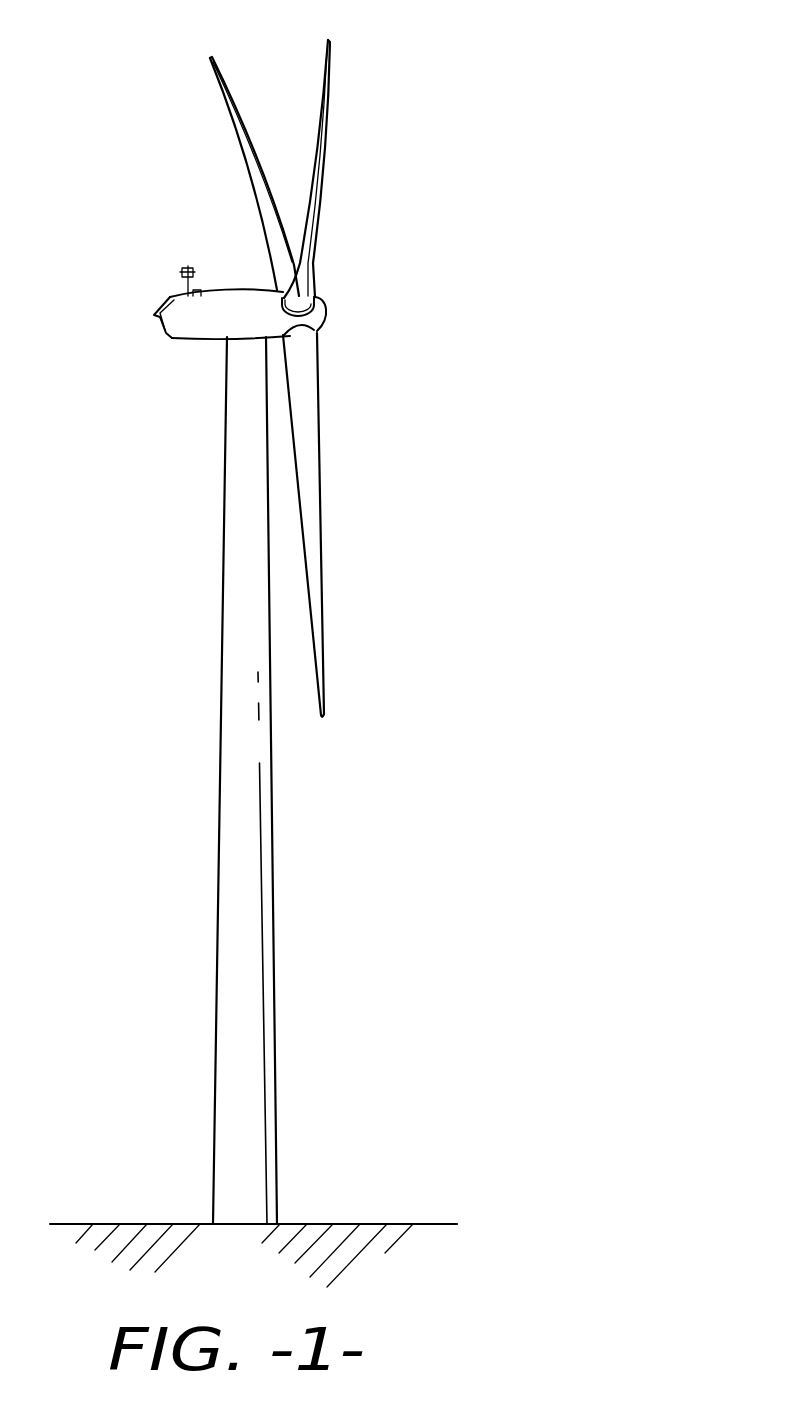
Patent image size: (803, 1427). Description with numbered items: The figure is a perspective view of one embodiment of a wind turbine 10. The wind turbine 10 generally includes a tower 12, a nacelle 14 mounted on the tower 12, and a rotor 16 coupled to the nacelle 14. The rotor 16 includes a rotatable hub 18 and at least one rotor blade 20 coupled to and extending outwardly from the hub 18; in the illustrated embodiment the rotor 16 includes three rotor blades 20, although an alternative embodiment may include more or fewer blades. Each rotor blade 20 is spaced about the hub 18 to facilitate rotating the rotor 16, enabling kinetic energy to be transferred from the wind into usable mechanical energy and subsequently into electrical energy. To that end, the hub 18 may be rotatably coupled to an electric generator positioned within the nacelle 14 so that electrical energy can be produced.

The wind turbine 10 is at (430, 122).
The tower 12 is at (230, 902).
The nacelle 14 is at (200, 340).
The rotor 16 is at (333, 289).
The rotatable hub 18 is at (327, 317).
The rotor blade 20 is at (320, 80).